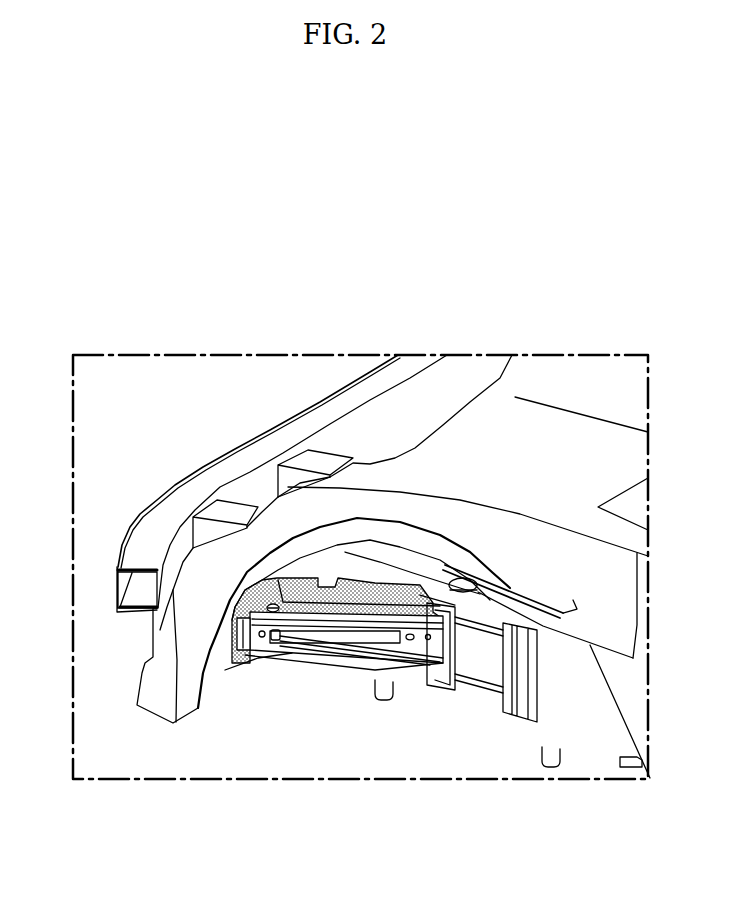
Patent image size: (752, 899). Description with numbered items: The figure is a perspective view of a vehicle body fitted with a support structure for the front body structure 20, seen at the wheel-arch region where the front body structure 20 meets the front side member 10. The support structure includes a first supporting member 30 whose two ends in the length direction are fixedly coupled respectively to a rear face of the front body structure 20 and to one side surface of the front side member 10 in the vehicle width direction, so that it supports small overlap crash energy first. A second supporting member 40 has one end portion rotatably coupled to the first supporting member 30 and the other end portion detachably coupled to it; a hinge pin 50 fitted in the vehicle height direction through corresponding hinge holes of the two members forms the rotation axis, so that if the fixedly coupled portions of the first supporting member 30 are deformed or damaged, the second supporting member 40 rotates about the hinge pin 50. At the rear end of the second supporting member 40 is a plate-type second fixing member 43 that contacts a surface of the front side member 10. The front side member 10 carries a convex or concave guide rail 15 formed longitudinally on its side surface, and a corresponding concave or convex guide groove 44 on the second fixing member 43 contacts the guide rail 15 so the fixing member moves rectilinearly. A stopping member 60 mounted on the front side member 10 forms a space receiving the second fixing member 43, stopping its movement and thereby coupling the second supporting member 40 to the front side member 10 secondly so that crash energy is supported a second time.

The front side member 10 is at (418, 685).
The guide rail 15 is at (488, 625).
The front body structure 20 is at (218, 657).
The first supporting member 30 is at (263, 650).
The second supporting member 40 is at (420, 653).
The second fixing member 43 is at (497, 692).
The guide groove 44 is at (460, 620).
The hinge pin 50 is at (265, 602).
The stopping member 60 is at (527, 714).